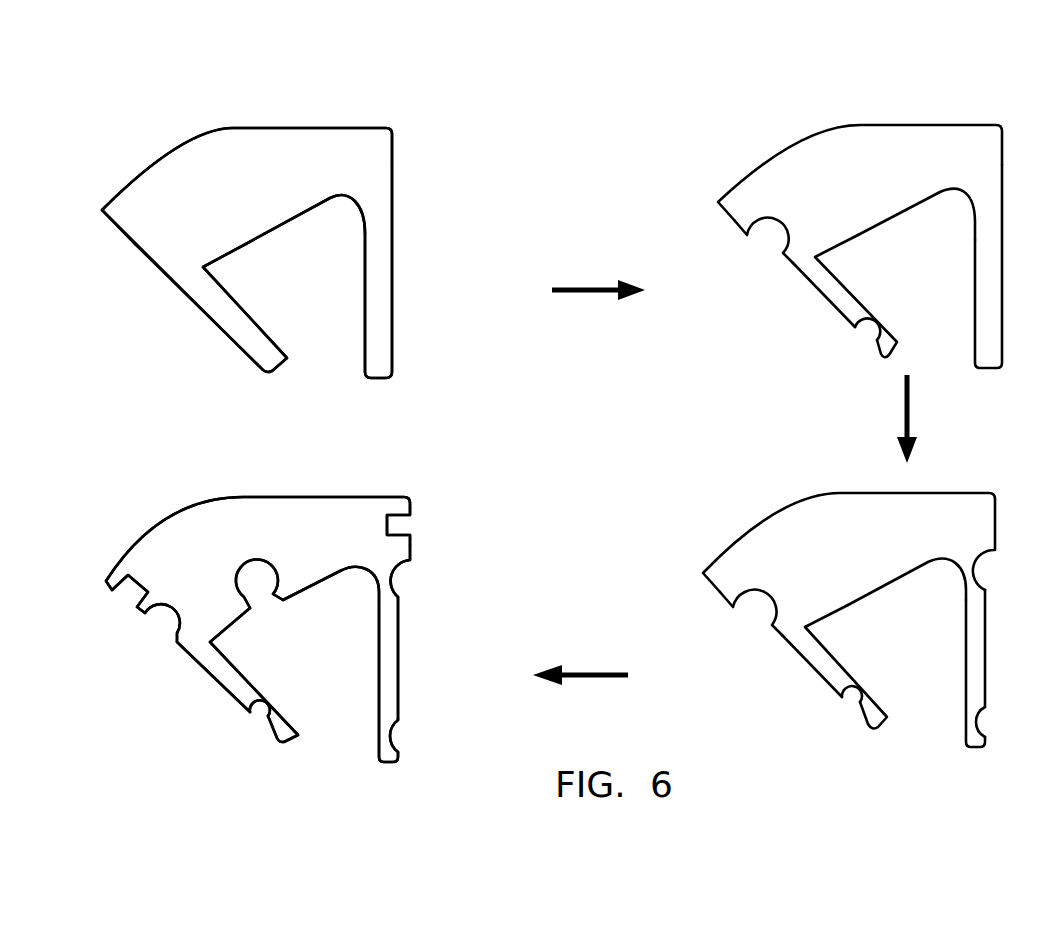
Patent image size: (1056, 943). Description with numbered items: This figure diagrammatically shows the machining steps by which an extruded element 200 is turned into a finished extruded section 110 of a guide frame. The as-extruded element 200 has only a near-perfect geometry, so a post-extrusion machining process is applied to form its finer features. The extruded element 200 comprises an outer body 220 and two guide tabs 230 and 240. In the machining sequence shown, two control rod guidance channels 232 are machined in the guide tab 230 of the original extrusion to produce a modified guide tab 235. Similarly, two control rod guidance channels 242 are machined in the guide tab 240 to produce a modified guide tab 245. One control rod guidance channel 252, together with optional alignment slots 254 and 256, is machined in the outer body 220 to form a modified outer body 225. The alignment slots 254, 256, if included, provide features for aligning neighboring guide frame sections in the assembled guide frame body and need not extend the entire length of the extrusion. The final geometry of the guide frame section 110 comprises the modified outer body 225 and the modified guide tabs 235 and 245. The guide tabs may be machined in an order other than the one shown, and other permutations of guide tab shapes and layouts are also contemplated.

The extruded element 200 is at (112, 176).
The extruded section 110 is at (141, 523).
The outer body 220 is at (363, 170).
The modified outer body 225 is at (237, 530).
The guide tab 230 is at (232, 317).
The guide tab 240 is at (382, 300).
The modified guide tab 235 is at (855, 298).
The modified guide tab 245 is at (967, 643).
The control rod guidance channel 232 is at (768, 248).
The control rod guidance channel 242 is at (984, 568).
The control rod guidance channel 252 is at (260, 591).
The alignment slot 254 is at (128, 595).
The alignment slot 256 is at (398, 527).